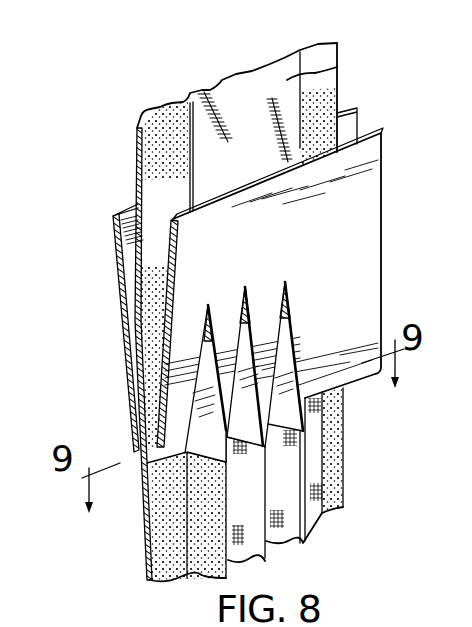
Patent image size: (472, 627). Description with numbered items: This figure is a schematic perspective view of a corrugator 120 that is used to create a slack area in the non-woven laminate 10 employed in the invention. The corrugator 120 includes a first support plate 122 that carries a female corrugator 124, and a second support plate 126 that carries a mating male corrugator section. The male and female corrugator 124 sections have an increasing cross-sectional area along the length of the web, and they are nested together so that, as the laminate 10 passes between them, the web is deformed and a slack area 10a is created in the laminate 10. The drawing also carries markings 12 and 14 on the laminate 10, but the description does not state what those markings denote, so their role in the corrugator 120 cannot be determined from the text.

The laminate 10 is at (253, 62).
The slack area 10a is at (310, 539).
The panel facing surface 12 is at (153, 170).
The panel end edge 14 is at (338, 72).
The corrugator 120 is at (295, 256).
The first support plate 122 is at (344, 264).
The female corrugator 124 is at (265, 357).
The second support plate 126 is at (117, 265).